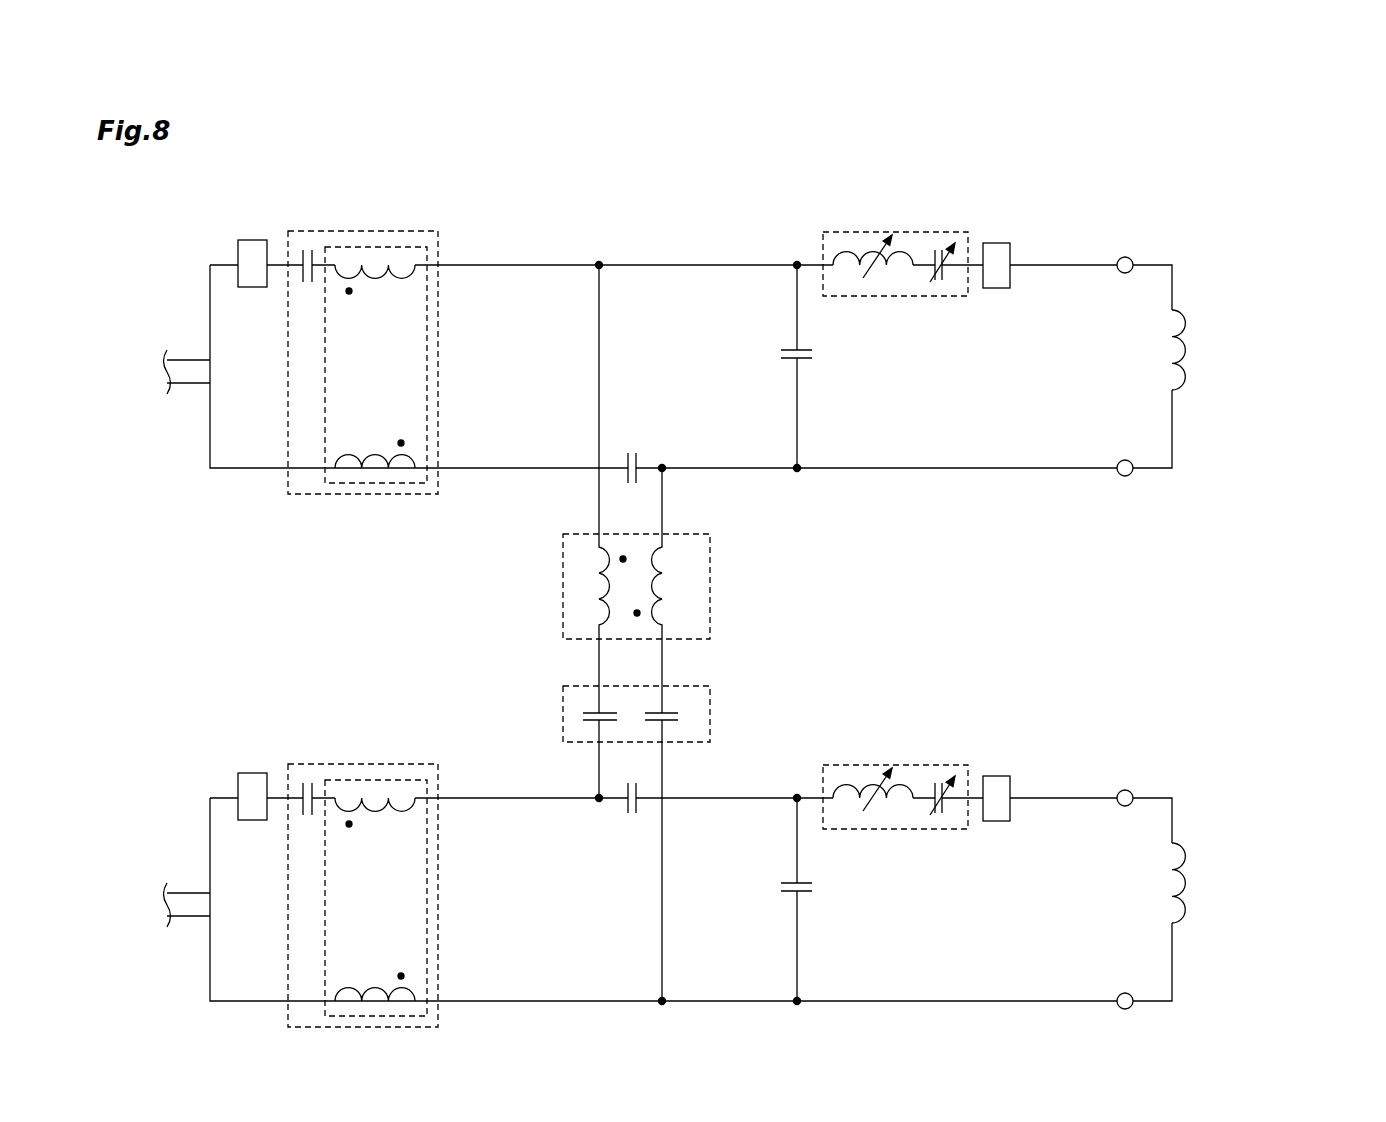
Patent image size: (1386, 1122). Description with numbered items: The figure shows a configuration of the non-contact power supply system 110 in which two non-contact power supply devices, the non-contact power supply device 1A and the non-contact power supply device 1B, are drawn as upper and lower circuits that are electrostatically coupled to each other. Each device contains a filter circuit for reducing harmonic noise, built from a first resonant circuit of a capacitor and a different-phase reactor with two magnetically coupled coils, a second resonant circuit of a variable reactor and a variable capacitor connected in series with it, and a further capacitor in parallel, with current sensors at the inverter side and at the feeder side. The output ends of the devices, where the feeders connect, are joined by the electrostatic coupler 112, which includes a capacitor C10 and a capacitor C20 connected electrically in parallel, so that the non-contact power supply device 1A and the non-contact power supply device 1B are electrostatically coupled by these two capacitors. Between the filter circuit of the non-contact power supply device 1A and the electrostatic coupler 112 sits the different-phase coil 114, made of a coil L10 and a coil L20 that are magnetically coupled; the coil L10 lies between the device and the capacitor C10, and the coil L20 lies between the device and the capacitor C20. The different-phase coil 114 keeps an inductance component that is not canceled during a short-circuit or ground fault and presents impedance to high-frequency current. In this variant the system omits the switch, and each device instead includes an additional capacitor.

The non-contact power supply device 1A is at (1195, 242).
The non-contact power supply device 1B is at (1195, 778).
The non-contact power supply system 110 is at (1305, 222).
The coil L10 is at (612, 563).
The coil L20 is at (650, 563).
The different-phase coil 114 is at (712, 598).
The capacitor C10 is at (583, 712).
The capacitor C20 is at (680, 712).
The electrostatic coupler 112 is at (712, 732).